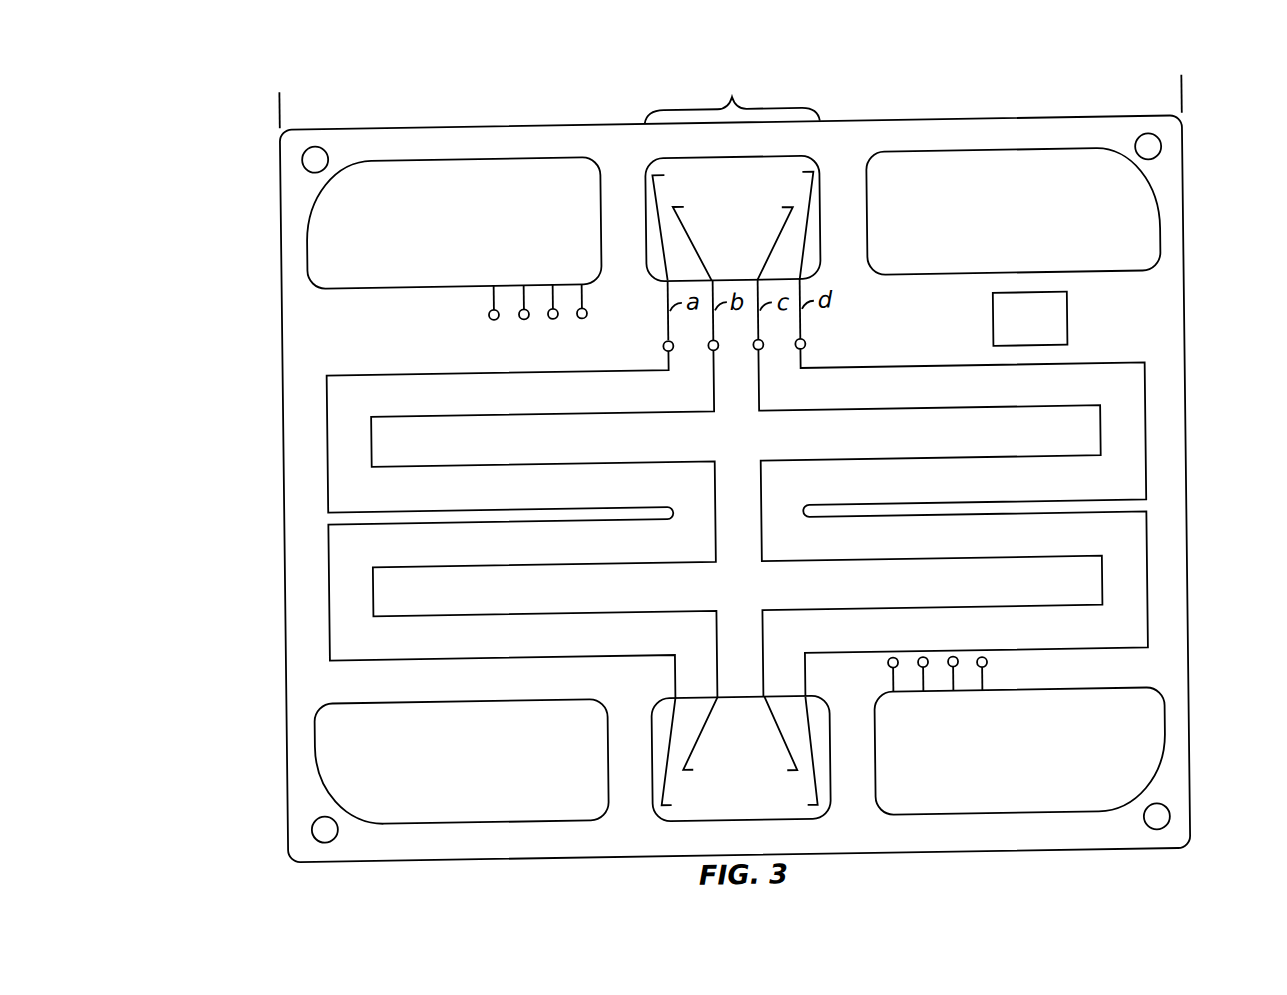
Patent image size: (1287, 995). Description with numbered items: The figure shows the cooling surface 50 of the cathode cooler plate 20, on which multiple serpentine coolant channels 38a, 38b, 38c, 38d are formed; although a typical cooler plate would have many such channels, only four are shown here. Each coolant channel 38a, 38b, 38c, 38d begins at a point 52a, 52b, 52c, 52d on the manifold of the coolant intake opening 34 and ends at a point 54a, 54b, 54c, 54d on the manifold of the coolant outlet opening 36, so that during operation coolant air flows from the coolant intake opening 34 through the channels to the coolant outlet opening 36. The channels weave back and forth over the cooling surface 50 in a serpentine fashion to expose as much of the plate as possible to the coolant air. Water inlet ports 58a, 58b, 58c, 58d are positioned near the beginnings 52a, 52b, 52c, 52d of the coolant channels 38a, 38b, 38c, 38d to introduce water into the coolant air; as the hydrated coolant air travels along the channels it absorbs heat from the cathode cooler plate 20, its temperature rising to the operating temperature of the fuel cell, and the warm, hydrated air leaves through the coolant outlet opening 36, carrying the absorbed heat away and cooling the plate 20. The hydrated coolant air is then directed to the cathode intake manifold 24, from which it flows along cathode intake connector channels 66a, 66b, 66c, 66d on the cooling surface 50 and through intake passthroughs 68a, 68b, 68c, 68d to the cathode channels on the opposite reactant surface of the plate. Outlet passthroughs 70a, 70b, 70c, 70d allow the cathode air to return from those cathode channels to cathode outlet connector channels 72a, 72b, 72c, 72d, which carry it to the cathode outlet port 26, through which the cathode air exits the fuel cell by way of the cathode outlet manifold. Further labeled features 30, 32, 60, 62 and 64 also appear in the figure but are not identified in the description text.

The cathode cooler plate 20 is at (278, 460).
The cathode intake manifold 24 is at (381, 230).
The cathode outlet port 26 is at (1073, 771).
The fuel manifold opening 30 is at (1004, 230).
The fuel manifold opening 32 is at (447, 771).
The coolant intake opening 34 is at (726, 263).
The coolant outlet opening 36 is at (725, 739).
The serpentine coolant channel 38a is at (350, 362).
The serpentine coolant channel 38b is at (365, 438).
The serpentine coolant channel 38c is at (1112, 434).
The serpentine coolant channel 38d is at (1110, 360).
The cooling surface 50 is at (347, 155).
The coolant channel beginning point 52a is at (677, 221).
The coolant channel beginning point 52b is at (699, 237).
The coolant channel beginning point 52c is at (770, 236).
The coolant channel beginning point 52d is at (790, 220).
The coolant channel end point 54a is at (685, 758).
The coolant channel end point 54b is at (706, 741).
The coolant channel end point 54c is at (774, 741).
The coolant channel end point 54d is at (794, 758).
The water inlet port 58a is at (668, 350).
The water inlet port 58b is at (713, 351).
The water inlet port 58c is at (762, 351).
The water inlet port 58d is at (805, 351).
The coolant inlet region 60 is at (732, 95).
The plate edge 62 is at (274, 128).
The plate edge 64 is at (1202, 124).
The cathode intake connector channel 66a is at (494, 281).
The cathode intake connector channel 66b is at (525, 282).
The cathode intake connector channel 66c is at (554, 282).
The cathode intake connector channel 66d is at (583, 283).
The intake passthrough 68a is at (492, 314).
The intake passthrough 68b is at (522, 316).
The intake passthrough 68c is at (559, 316).
The intake passthrough 68d is at (588, 314).
The outlet passthrough 70a is at (887, 667).
The outlet passthrough 70b is at (918, 660).
The outlet passthrough 70c is at (954, 661).
The outlet passthrough 70d is at (985, 669).
The cathode outlet connector channel 72a is at (891, 694).
The cathode outlet connector channel 72b is at (921, 695).
The cathode outlet connector channel 72c is at (951, 695).
The cathode outlet connector channel 72d is at (981, 696).